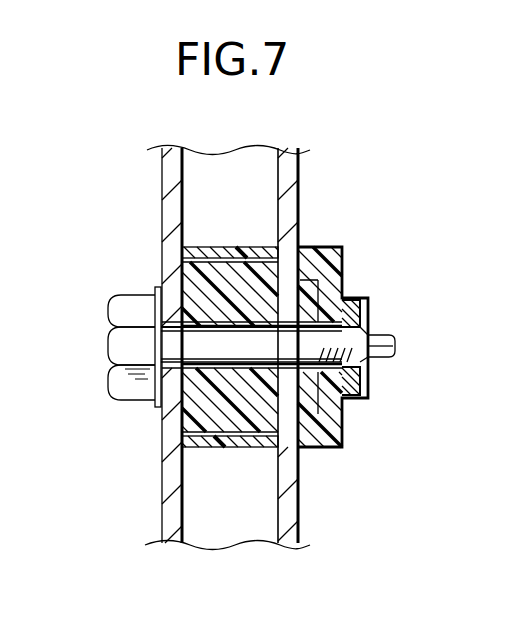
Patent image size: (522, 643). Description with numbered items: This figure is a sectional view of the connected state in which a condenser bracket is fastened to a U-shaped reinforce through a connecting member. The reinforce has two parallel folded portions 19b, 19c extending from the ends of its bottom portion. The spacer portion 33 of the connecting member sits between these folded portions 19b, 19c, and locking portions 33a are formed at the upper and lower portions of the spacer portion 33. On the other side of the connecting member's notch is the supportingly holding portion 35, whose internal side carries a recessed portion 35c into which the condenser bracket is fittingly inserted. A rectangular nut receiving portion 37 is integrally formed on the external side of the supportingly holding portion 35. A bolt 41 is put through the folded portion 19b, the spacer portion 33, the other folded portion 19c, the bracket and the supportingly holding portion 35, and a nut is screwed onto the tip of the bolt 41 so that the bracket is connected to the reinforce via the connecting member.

The folded portion 19b is at (172, 201).
The folded portion 19c is at (289, 153).
The spacer portion 33 is at (252, 420).
The locking portion 33a is at (243, 255).
The supportingly holding portion 35 is at (343, 256).
The recessed portion 35c is at (333, 398).
The nut receiving portion 37 is at (383, 371).
The bolt 41 is at (115, 344).